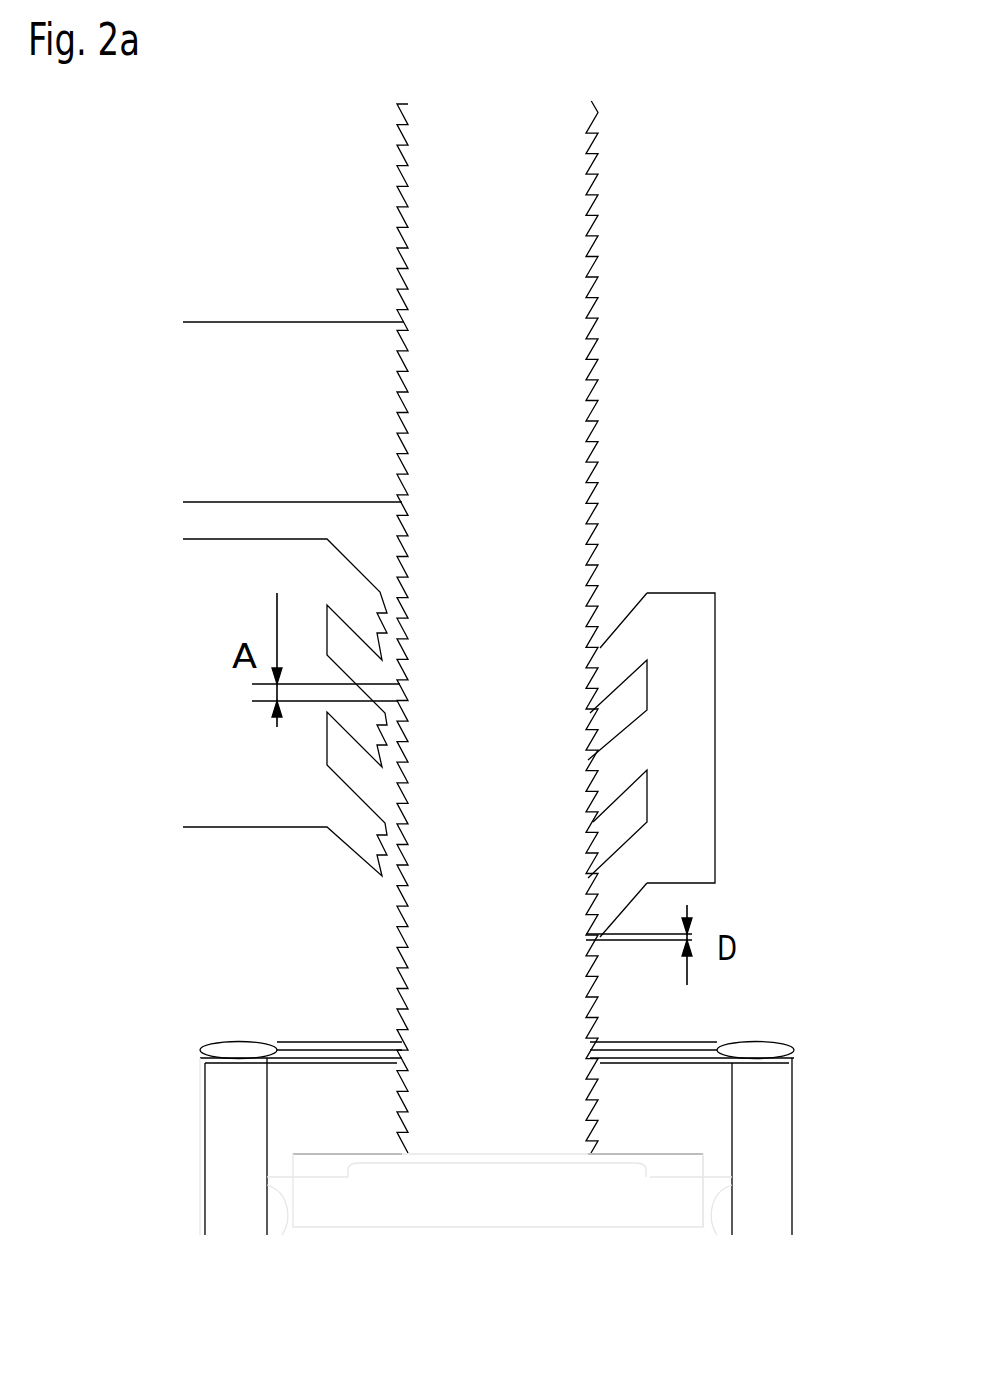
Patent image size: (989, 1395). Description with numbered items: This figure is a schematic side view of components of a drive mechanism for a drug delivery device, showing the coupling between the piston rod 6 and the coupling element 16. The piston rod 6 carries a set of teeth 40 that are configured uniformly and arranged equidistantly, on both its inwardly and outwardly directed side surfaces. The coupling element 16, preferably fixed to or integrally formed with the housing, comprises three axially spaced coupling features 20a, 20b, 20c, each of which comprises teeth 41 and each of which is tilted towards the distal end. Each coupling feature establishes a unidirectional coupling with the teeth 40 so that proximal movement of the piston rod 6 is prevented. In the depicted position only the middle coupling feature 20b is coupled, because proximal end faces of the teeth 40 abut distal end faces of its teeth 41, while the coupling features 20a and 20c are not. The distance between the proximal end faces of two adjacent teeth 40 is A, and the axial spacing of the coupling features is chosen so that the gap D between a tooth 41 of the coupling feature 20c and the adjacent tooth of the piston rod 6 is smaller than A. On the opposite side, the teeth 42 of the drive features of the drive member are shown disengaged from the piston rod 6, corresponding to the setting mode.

The piston rod 6 is at (500, 1068).
The coupling element 16 is at (725, 764).
The left coupling feature 20a is at (653, 855).
The middle coupling feature 20b is at (630, 758).
The right coupling feature 20c is at (617, 650).
The teeth of the piston rod 40 is at (497, 627).
The teeth of the coupling feature 41 is at (598, 655).
The teeth of the drive feature 42 is at (385, 753).